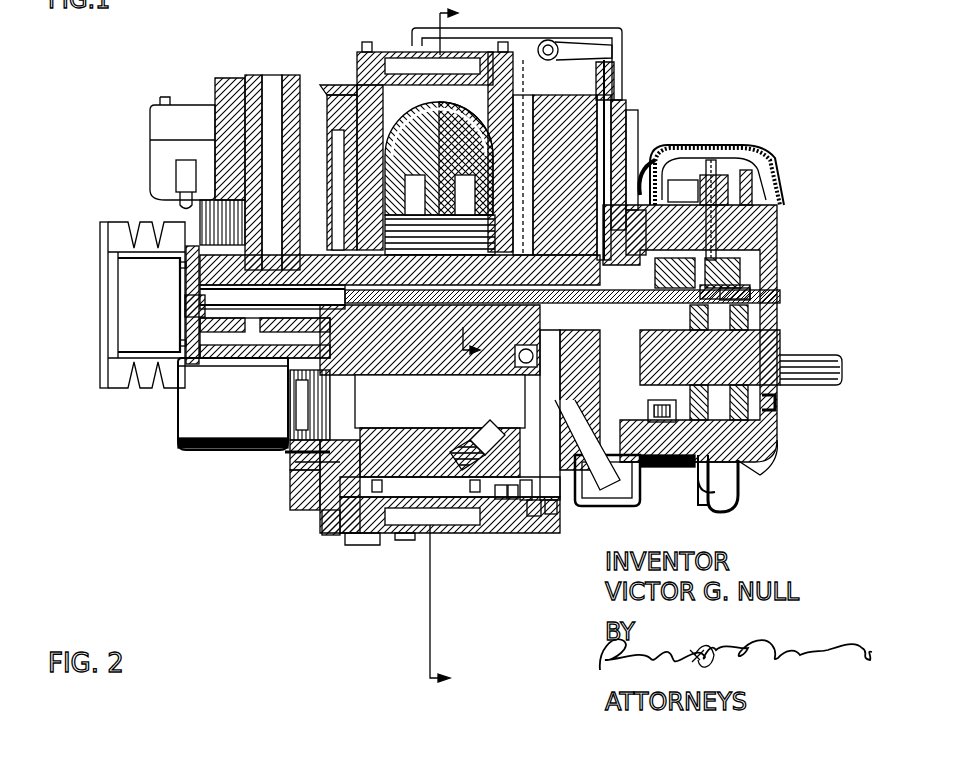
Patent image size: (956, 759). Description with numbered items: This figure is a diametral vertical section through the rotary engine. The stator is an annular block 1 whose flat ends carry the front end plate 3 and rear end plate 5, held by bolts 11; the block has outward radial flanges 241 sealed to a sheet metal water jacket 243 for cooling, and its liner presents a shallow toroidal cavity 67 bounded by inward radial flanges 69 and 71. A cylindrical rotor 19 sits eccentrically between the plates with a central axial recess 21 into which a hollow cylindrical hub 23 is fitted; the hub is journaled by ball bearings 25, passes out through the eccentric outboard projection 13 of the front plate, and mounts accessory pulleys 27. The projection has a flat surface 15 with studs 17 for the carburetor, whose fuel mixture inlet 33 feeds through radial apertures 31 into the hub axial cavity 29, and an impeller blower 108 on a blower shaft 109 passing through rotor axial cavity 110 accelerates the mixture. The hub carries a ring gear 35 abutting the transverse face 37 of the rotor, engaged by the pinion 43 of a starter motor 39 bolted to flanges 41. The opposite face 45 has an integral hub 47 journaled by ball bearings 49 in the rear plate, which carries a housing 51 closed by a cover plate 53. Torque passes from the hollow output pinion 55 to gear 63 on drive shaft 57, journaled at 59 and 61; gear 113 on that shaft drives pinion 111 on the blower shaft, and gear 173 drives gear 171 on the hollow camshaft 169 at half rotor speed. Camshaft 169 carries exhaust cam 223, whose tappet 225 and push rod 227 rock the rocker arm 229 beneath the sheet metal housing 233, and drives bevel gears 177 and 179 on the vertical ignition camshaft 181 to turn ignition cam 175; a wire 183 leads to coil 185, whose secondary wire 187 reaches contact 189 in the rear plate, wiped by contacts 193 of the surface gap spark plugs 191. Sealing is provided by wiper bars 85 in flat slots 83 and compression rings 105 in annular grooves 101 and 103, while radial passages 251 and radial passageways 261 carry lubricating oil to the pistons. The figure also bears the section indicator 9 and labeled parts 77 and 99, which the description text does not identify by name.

The annular block 1 is at (451, 348).
The front end plate 3 is at (335, 72).
The rear end plate 5 is at (548, 62).
The section line 9-9 / lever 9 is at (478, 55).
The bolts 11 is at (330, 520).
The outboard projection 13 is at (232, 358).
The flat surface 15 is at (182, 273).
The studs 17 is at (240, 262).
The rotor 19 is at (470, 445).
The central axial recess 21 is at (422, 440).
The hollow cylindrical hub 23 is at (418, 380).
The ball bearings 25 is at (300, 350).
The accessory pulleys 27 is at (100, 278).
The axial cavity 29 is at (288, 305).
The radial apertures 31 is at (200, 308).
The fuel mixture inlet 33 is at (245, 240).
The ring gear 35 is at (325, 478).
The transverse face 37 is at (335, 500).
The starter motor 39 is at (178, 422).
The flanges 41 is at (290, 458).
The pinion 43 is at (410, 298).
The opposite face 45 is at (620, 92).
The integral hub 47 is at (612, 165).
The ball bearings 49 is at (632, 150).
The housing 51 is at (772, 467).
The cover plate 53 is at (777, 238).
The output pinion 55 is at (662, 176).
The drive shaft 57 is at (245, 132).
The journal 59 is at (605, 500).
The journal 61 is at (782, 335).
The gear 63 is at (565, 495).
The toroidal cavity 67 is at (352, 68).
The radial flange 69 is at (345, 88).
The radial flange 71 is at (615, 160).
The clip 77 is at (270, 195).
The flat slots 83 is at (500, 120).
The wiper bars 85 is at (330, 100).
The bracket 99 is at (260, 170).
The annular grooves 101 is at (333, 540).
The annular grooves 103 is at (370, 540).
The compression rings 105 is at (512, 500).
The impeller blower 108 is at (425, 420).
The blower shaft 109 is at (762, 300).
The rotor axial cavity 110 is at (525, 510).
The pinion 111 is at (752, 290).
The gear 113 is at (665, 385).
The camshaft 169 is at (770, 200).
The gear 171 is at (778, 405).
The gear 173 is at (728, 452).
The ignition cam 175 is at (730, 195).
The bevel gear 177 is at (777, 217).
The bevel gear 179 is at (745, 268).
The vertical ignition camshaft 181 is at (725, 196).
The wire 183 is at (740, 528).
The coil 185 is at (678, 488).
The secondary wire 187 is at (558, 512).
The contact 189 is at (532, 535).
The surface gap spark plugs 191 is at (458, 518).
The contact 193 is at (500, 500).
The exhaust cam 223 is at (650, 500).
The tappet 225 is at (768, 160).
The push rod 227 is at (612, 62).
The rocker arm 229 is at (605, 100).
The sheet metal housing 233 is at (427, 58).
The radial flanges 241 is at (362, 60).
The water jacket 243 is at (405, 538).
The radial passages 251 is at (632, 112).
The radial passageways 261 is at (235, 90).